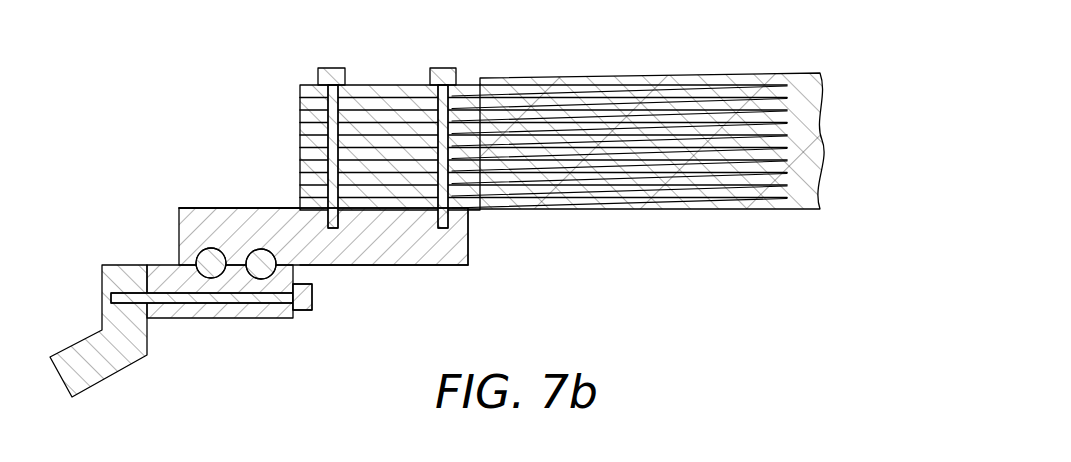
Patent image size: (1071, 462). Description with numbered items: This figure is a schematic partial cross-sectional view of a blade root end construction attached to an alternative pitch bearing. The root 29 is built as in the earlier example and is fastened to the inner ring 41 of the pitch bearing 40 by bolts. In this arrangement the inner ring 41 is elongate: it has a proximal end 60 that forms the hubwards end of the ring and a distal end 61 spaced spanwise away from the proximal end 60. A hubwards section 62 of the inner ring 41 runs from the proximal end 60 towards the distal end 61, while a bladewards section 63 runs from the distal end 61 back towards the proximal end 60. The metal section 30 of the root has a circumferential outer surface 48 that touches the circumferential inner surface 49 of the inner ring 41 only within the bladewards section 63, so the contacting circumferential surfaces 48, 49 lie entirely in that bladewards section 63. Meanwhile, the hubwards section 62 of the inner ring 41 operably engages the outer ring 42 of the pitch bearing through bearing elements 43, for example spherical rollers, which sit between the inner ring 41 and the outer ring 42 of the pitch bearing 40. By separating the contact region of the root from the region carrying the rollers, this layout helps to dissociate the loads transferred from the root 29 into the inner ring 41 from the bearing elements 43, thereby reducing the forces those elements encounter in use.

The root 29 is at (248, 62).
The metal section 30 is at (302, 64).
The pitch bearing 40 is at (273, 338).
The inner ring 41 is at (186, 220).
The outer ring 42 is at (240, 318).
The bearing elements 43 is at (211, 272).
The circumferential outer surface 48 is at (385, 206).
The circumferential inner surface 49 is at (368, 210).
The proximal end 60 is at (179, 250).
The distal end 61 is at (468, 252).
The hubwards section 62 is at (300, 203).
The bladewards section 63 is at (292, 327).